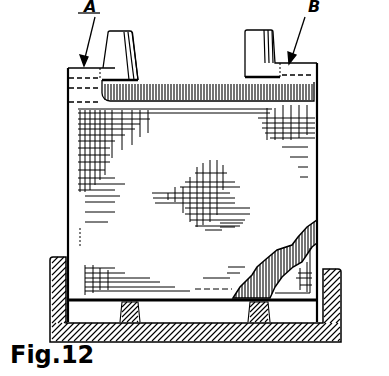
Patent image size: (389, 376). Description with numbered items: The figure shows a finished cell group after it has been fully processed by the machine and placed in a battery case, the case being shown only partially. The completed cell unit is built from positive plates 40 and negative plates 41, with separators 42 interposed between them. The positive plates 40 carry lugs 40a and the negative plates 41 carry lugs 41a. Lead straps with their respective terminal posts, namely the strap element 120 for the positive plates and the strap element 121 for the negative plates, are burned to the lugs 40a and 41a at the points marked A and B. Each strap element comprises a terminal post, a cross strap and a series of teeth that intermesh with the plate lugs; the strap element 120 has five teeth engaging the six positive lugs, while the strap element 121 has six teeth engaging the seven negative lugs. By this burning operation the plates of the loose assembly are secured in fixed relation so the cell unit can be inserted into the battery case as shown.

The positive plates 40 is at (312, 251).
The lugs of positive plates 40a is at (313, 78).
The negative plates 41 is at (80, 203).
The lugs of negative plates 41a is at (75, 95).
The separators 42 is at (192, 80).
The strap element 120 is at (244, 58).
The strap element 121 is at (141, 61).